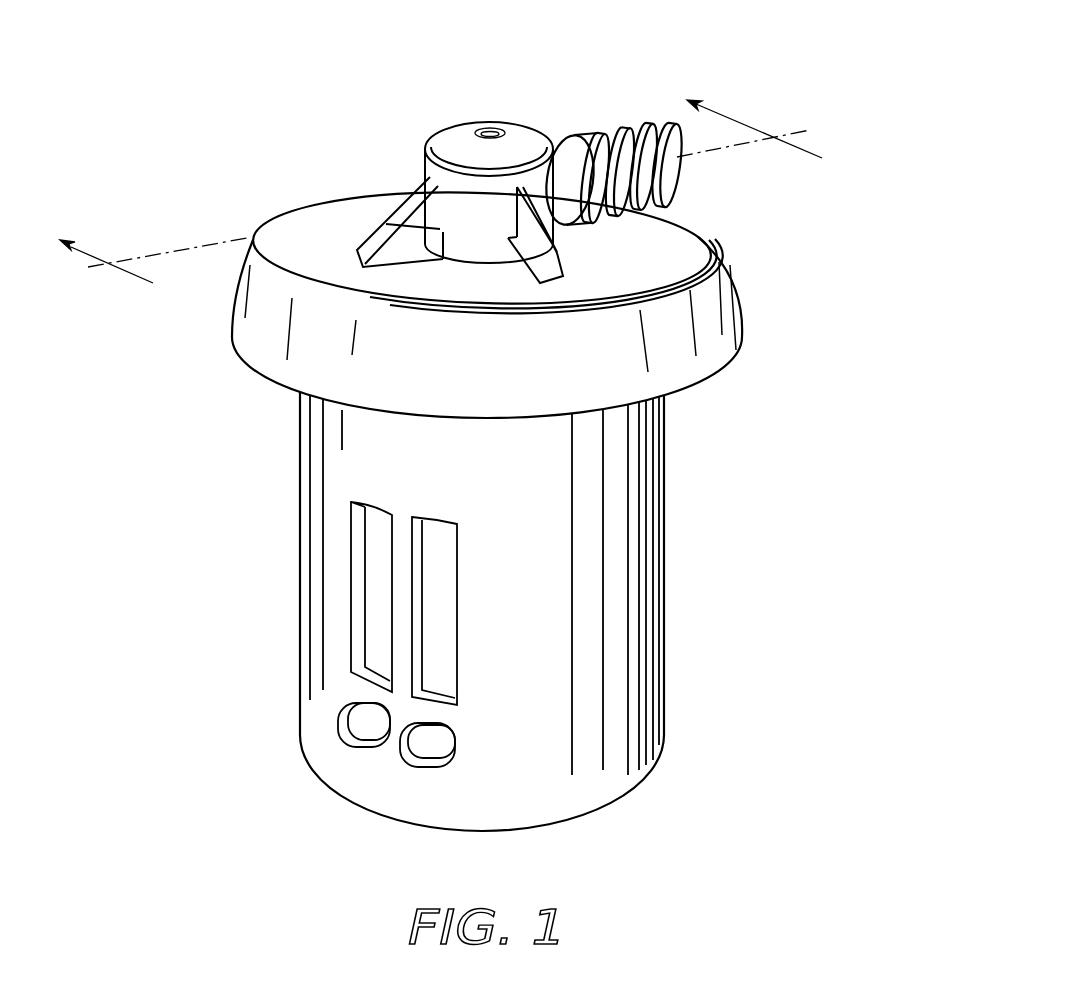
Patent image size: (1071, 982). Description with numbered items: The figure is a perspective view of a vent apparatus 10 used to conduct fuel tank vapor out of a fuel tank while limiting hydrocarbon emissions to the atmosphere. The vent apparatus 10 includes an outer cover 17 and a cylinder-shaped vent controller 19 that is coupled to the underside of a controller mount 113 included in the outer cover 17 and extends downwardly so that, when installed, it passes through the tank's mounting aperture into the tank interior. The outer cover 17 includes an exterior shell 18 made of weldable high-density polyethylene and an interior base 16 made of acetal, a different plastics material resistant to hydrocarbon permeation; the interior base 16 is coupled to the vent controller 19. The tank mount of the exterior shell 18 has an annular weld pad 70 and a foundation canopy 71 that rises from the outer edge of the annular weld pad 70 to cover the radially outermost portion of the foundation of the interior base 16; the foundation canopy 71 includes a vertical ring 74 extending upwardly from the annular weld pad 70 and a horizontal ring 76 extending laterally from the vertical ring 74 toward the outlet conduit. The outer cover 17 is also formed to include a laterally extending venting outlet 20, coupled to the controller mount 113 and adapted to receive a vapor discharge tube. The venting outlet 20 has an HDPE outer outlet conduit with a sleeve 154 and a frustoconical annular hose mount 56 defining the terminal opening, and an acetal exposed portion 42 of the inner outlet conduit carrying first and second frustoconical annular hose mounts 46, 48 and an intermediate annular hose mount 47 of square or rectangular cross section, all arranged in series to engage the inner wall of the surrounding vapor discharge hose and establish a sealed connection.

The vent apparatus 10 is at (469, 422).
The exterior shell 18 is at (530, 306).
The vent controller 19 is at (688, 748).
The interior base 16 is at (692, 180).
The venting outlet 20 is at (652, 150).
The exposed portion of inner outlet conduit 42 is at (636, 112).
The first frustoconical annular hose mount 46 is at (593, 130).
The second frustoconical annular hose mount 48 is at (652, 120).
The frustoconical annular hose mount 56 is at (573, 120).
The intermediate annular hose mount 47 is at (632, 206).
The sleeve 154 is at (565, 212).
The horizontal ring 76 is at (683, 250).
The vertical ring 74 is at (728, 304).
The controller mount 113 is at (778, 327).
The outer cover 17 is at (779, 371).
The annular weld pad 70 is at (673, 377).
The foundation canopy 71 is at (257, 355).